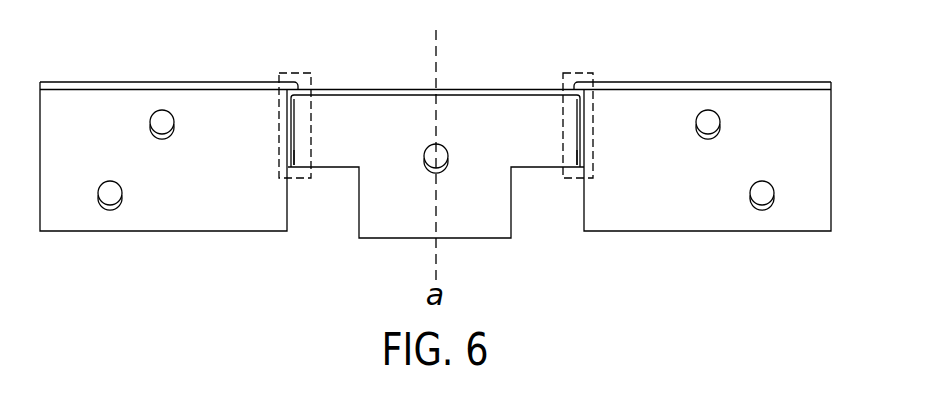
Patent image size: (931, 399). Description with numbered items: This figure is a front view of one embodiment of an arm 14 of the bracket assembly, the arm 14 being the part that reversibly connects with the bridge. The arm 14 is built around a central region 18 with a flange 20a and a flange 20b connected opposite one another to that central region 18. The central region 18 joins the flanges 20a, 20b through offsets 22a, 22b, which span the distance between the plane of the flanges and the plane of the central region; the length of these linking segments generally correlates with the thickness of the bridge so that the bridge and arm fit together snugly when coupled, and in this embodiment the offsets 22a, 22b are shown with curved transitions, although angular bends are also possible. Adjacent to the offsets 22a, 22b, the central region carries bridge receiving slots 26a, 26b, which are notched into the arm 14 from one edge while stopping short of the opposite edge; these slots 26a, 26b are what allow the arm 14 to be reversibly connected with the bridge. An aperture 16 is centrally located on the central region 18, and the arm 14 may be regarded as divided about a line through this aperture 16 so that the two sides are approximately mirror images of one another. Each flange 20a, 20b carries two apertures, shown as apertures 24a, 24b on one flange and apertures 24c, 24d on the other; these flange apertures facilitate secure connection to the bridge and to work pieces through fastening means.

The arm 14 is at (467, 58).
The aperture 16 is at (447, 159).
The central region 18 is at (387, 120).
The flange 20a is at (760, 110).
The flange 20b is at (100, 115).
The offset 22a is at (579, 73).
The offset 22b is at (297, 73).
The aperture 24a is at (705, 125).
The aperture 24b is at (752, 196).
The aperture 24c is at (167, 123).
The aperture 24d is at (115, 195).
The bridge receiving slot 26a is at (551, 187).
The bridge receiving slot 26b is at (327, 187).